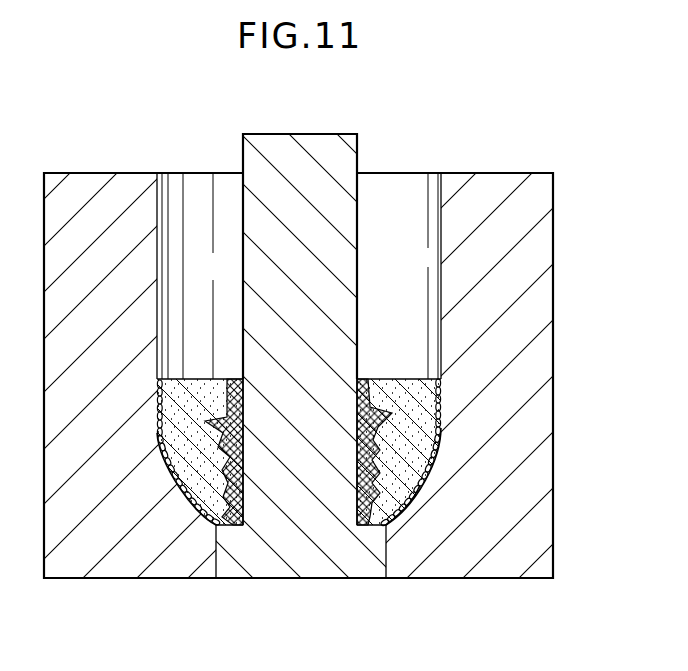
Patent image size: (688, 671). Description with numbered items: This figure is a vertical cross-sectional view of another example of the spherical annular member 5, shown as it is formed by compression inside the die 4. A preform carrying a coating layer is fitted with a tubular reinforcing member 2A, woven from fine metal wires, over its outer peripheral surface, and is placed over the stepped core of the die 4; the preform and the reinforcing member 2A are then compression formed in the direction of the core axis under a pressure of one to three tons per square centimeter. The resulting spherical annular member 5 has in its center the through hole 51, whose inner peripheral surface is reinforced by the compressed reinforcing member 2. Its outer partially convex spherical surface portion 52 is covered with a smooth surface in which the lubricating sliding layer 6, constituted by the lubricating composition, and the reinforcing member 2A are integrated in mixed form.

The reinforcing member 2 is at (362, 380).
The tubular reinforcing member 2A is at (424, 466).
The die 4 is at (577, 187).
The spherical annular member 5 is at (428, 405).
The through hole 51 is at (357, 505).
The outer partially convex spherical surface portion 52 is at (437, 444).
The lubricating sliding layer 6 is at (410, 497).